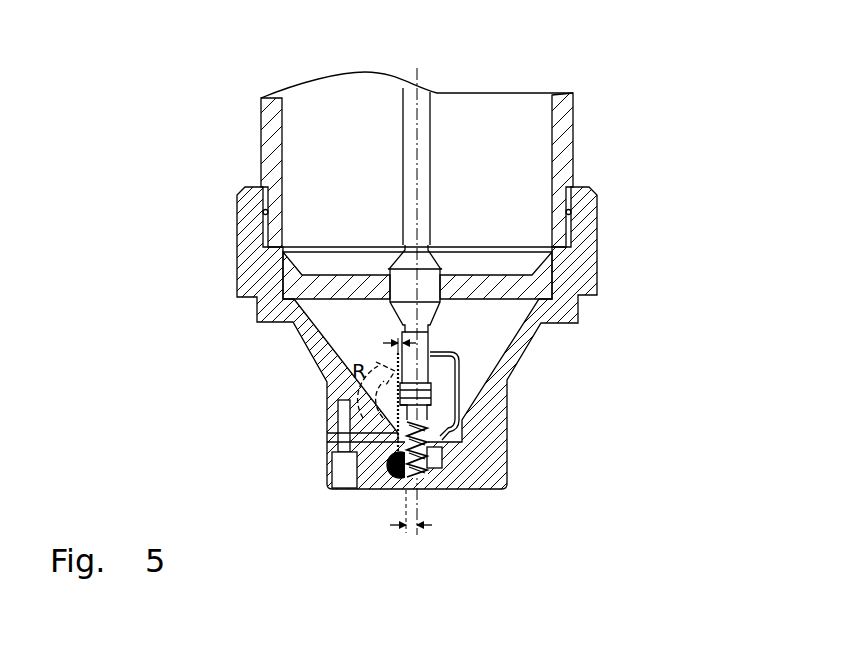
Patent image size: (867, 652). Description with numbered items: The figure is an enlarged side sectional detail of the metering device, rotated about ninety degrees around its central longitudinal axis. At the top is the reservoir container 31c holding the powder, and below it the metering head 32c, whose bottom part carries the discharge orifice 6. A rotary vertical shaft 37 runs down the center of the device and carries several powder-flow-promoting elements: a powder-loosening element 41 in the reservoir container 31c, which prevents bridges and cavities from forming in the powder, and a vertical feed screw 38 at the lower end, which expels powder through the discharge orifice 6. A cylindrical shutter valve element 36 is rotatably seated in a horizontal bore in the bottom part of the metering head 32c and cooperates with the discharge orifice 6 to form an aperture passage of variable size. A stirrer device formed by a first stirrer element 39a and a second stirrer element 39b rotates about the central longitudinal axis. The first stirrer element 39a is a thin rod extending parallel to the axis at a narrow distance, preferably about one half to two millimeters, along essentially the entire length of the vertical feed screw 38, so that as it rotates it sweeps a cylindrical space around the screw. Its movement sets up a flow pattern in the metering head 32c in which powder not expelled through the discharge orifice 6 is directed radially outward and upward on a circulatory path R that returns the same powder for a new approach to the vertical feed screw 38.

The powder-loosening element 41 is at (415, 93).
The rotary vertical shaft 37 is at (422, 150).
The reservoir container 31c is at (520, 155).
The metering head 32c is at (562, 307).
The first stirrer element 39a is at (392, 422).
The second stirrer element 39b is at (440, 440).
The vertical feed screw 38 is at (412, 458).
The shutter valve element 36 is at (397, 475).
The discharge orifice 6 is at (410, 483).